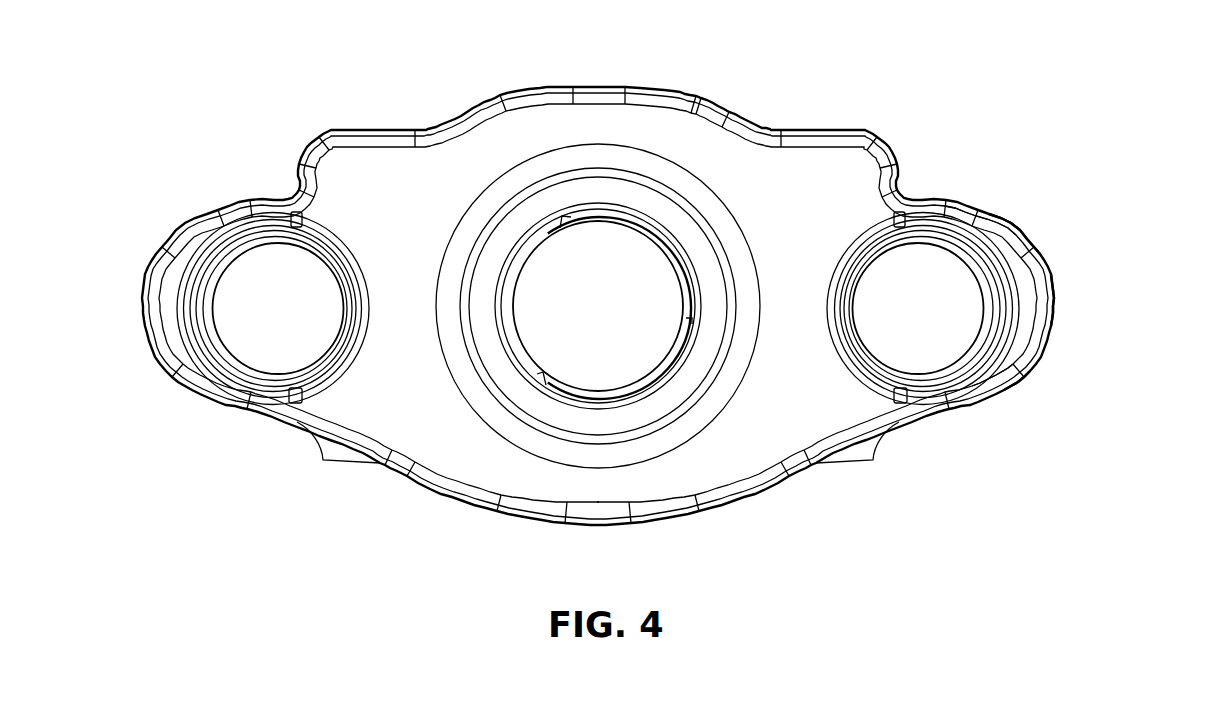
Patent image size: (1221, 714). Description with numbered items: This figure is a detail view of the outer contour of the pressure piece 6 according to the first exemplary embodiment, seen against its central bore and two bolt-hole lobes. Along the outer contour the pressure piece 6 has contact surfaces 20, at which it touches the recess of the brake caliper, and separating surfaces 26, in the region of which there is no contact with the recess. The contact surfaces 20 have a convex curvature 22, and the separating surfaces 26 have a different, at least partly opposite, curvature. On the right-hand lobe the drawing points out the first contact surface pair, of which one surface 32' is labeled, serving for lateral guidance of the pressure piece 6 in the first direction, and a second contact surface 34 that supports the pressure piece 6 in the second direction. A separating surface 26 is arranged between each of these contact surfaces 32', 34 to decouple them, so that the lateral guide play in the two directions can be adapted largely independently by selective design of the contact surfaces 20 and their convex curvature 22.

The pressure piece 6 is at (653, 130).
The contact surfaces 20 is at (957, 247).
The convex curvature 22 is at (993, 237).
The separating surfaces 26 is at (1025, 242).
The second contact surface 34 is at (1058, 307).
The first contact surface pair 32' is at (1047, 428).